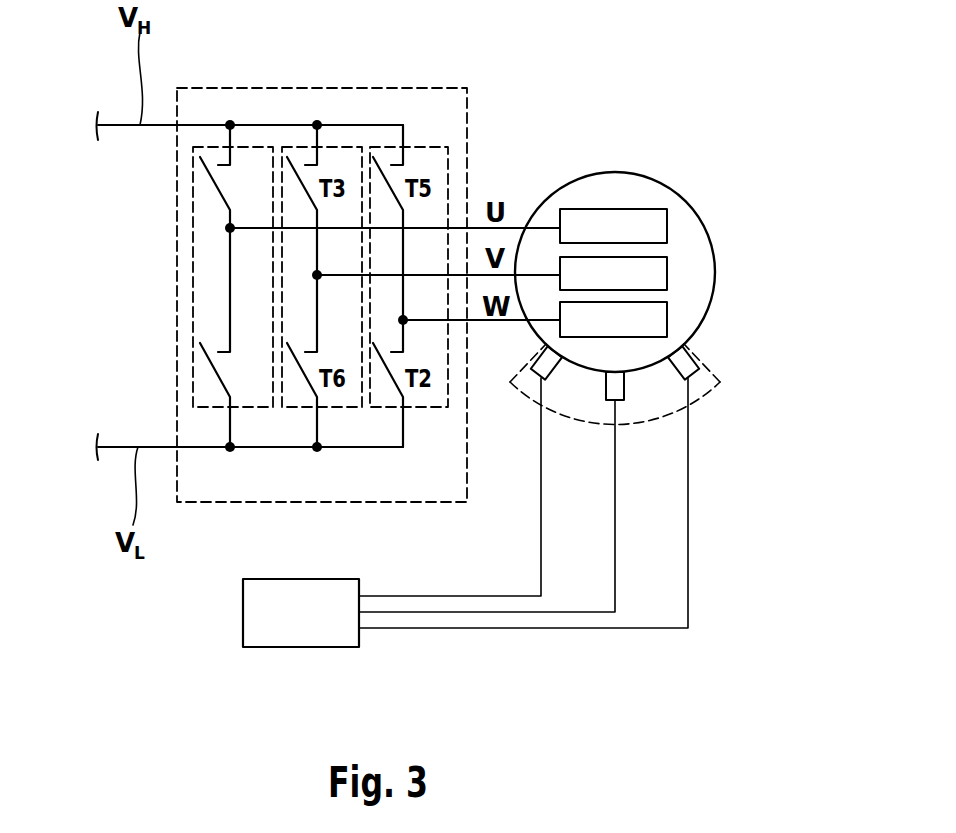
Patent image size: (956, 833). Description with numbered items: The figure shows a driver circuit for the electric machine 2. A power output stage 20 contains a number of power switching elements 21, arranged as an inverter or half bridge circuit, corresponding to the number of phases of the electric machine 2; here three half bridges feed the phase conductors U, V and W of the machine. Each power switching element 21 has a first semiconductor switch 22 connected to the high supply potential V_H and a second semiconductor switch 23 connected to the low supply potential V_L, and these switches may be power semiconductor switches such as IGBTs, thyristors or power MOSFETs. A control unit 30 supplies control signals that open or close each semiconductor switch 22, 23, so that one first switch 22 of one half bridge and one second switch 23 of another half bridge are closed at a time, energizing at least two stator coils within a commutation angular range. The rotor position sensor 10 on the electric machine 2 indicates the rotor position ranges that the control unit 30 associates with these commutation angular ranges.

The electric machine 2 is at (700, 255).
The rotor position sensor 10 is at (717, 378).
The power output stage 20 is at (410, 88).
The power switching element 21 is at (303, 147).
The first semiconductor switch 22 is at (215, 190).
The second semiconductor switch 23 is at (215, 380).
The control unit 30 is at (285, 637).